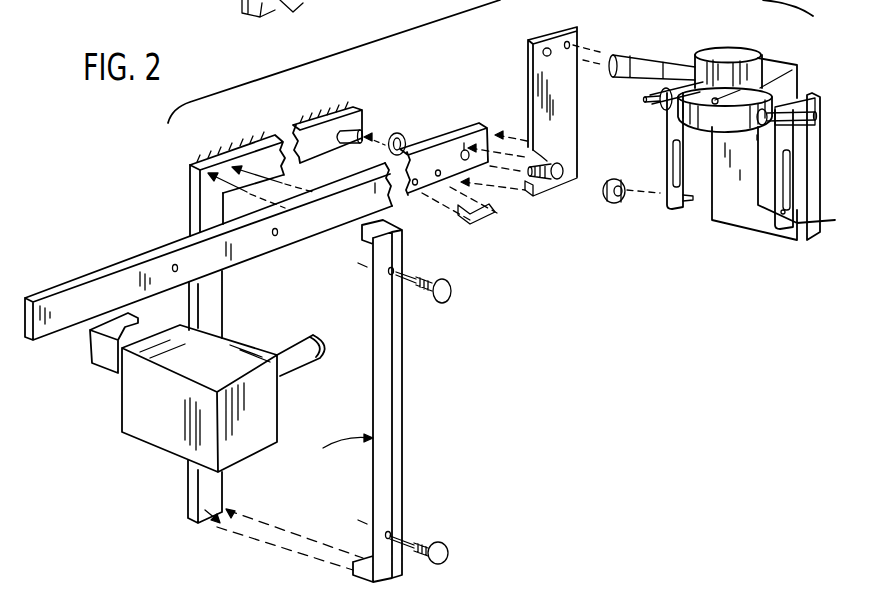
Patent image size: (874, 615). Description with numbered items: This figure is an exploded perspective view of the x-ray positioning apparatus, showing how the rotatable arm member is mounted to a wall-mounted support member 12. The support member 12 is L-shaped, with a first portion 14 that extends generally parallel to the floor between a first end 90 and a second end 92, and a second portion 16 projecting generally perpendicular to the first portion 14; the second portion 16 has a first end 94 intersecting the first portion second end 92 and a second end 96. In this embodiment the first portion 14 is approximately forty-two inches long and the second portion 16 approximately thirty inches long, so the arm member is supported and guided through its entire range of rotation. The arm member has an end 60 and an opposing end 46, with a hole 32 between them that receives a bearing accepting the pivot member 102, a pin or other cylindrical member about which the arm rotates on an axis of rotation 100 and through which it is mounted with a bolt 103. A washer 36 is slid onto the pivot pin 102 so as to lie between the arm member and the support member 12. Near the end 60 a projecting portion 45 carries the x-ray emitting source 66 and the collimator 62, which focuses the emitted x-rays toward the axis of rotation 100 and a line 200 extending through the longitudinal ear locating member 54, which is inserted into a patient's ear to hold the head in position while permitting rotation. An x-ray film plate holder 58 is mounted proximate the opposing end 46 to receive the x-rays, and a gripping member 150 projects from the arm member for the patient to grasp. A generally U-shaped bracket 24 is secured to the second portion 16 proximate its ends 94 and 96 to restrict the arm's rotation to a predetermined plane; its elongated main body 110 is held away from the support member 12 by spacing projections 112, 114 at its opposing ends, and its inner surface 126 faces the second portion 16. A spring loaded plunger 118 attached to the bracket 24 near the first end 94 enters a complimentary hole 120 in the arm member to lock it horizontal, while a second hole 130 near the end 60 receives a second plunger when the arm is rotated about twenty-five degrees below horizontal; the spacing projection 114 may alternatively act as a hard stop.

The support member 12 is at (168, 180).
The first portion 14 is at (268, 160).
The second portion 16 is at (208, 315).
The bracket 24 is at (408, 468).
The hole 32 is at (463, 132).
The washer 36 is at (400, 131).
The projecting portion 45 is at (110, 352).
The opposing end 46 is at (493, 113).
The ear locating member 54 is at (760, 214).
The x-ray film plate holder 58 is at (792, 228).
The end 60 is at (70, 287).
The collimator 62 is at (310, 372).
The x-ray emitting source 66 is at (155, 412).
The first end 90 is at (352, 120).
The second end 92 is at (213, 163).
The first end 94 is at (212, 212).
The second end 96 is at (205, 476).
The axis of rotation 100 is at (593, 178).
The pivot member 102 is at (358, 125).
The bolt 103 is at (528, 199).
The bracket main body 110 is at (392, 357).
The spacing projection 112 is at (390, 220).
The spacing projection 114 is at (353, 578).
The spring loaded plunger 118 is at (452, 302).
The complimentary hole 120 is at (283, 236).
The inner surface 126 is at (340, 456).
The complimentary hole 130 is at (180, 270).
The gripping member 150 is at (495, 221).
The line 200 is at (817, 218).